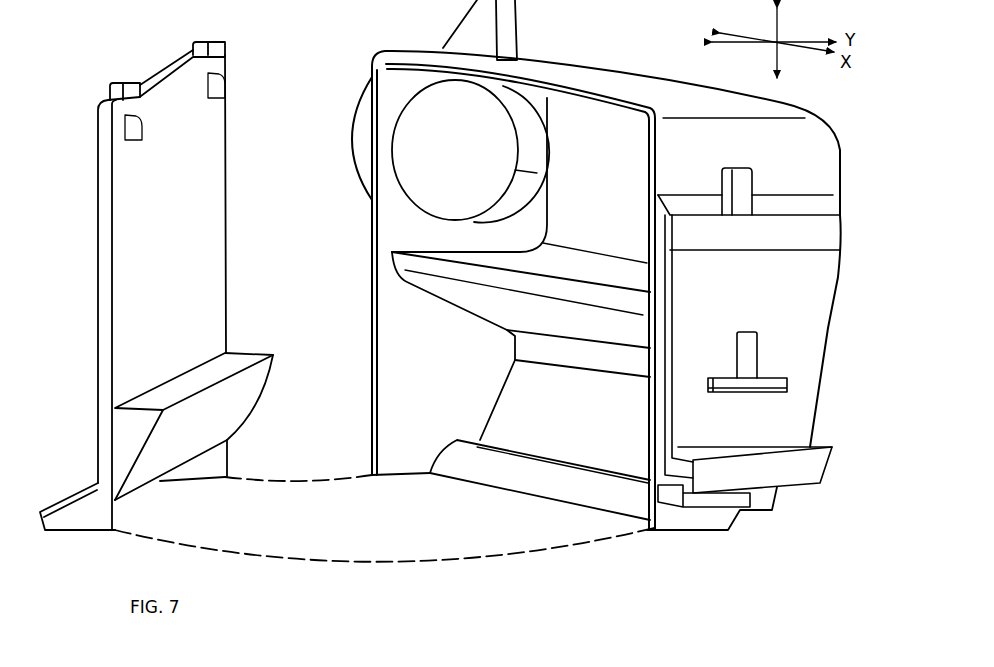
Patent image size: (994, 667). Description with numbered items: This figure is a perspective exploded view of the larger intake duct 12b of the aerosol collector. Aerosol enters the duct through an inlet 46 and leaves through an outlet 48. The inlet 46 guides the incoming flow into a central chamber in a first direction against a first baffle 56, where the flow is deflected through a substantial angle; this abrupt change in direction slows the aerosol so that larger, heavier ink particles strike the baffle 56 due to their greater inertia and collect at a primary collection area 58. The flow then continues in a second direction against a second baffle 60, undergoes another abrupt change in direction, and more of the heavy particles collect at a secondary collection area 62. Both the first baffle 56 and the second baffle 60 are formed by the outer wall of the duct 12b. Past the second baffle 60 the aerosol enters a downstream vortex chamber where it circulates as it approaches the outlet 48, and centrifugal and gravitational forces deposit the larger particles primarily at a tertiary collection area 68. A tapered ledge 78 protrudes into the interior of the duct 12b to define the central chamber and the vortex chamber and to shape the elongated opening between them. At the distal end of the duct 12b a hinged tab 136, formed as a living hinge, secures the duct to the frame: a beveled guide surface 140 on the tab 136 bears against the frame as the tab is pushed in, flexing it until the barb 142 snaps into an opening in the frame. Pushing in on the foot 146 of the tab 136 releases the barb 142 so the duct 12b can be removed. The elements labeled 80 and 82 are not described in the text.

The larger intake duct 12b is at (596, 49).
The inlet 46 is at (583, 530).
The outlet 48 is at (484, 176).
The first baffle 56 is at (574, 314).
The primary collection area 58 is at (574, 314).
The second baffle 60 is at (133, 286).
The secondary collection area 62 is at (133, 286).
The tertiary collection area 68 is at (521, 341).
The tapered ledge 78 is at (598, 278).
The lip 80 is at (478, 442).
The bracket 82 is at (237, 360).
The hinged tab 136 is at (817, 378).
The beveled guide surface 140 is at (748, 362).
The barb 142 is at (755, 393).
The foot 146 is at (798, 473).